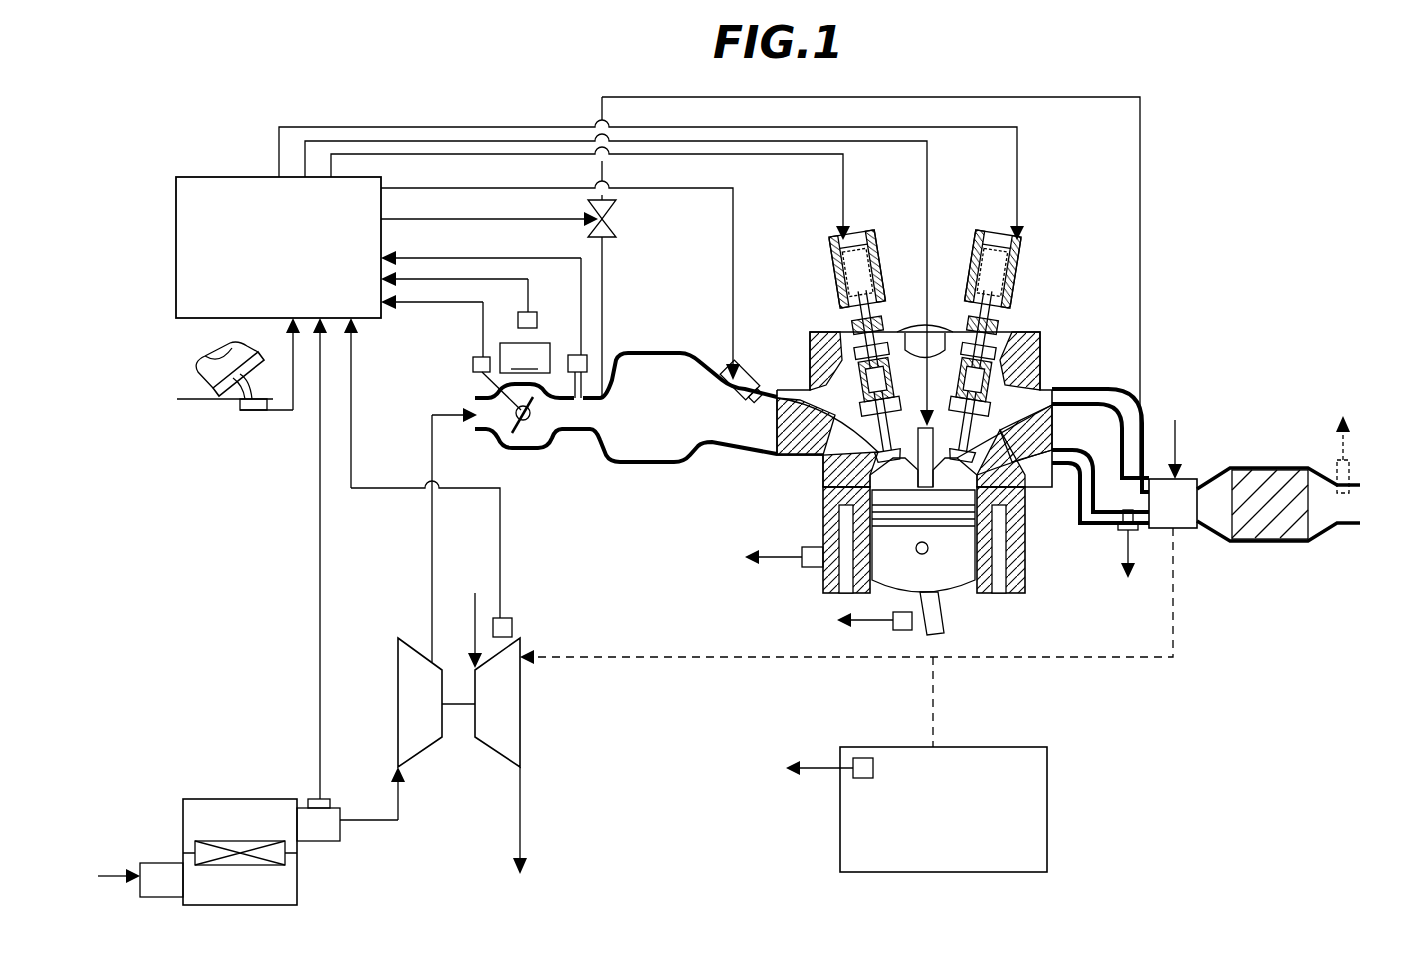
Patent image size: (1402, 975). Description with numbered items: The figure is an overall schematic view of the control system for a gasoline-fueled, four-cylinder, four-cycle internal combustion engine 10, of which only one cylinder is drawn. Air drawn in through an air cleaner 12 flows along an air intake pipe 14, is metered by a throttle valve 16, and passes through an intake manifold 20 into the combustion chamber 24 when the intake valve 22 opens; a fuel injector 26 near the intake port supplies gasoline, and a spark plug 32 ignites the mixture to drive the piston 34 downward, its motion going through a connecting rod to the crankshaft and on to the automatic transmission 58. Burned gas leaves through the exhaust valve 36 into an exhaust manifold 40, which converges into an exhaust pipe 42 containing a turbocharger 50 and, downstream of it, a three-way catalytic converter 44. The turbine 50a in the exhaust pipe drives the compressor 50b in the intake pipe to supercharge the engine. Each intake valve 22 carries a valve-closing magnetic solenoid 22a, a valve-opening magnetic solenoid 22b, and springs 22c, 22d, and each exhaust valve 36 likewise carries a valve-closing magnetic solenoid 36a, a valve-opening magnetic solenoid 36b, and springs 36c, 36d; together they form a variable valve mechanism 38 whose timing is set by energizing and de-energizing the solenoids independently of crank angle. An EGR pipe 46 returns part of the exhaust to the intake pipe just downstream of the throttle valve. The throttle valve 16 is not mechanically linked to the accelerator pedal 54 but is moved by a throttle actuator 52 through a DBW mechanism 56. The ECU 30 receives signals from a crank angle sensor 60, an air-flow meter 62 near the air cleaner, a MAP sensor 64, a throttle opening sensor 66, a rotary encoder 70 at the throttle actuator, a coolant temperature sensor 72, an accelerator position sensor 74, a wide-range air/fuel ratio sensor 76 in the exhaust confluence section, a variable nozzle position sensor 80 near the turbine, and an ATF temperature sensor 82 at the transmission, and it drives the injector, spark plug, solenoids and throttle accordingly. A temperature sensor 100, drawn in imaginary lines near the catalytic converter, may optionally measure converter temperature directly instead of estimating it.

The internal combustion engine 10 is at (1052, 376).
The air cleaner 12 is at (232, 799).
The air intake pipe 14 is at (430, 530).
The throttle valve 16 is at (527, 437).
The intake manifold 20 is at (708, 353).
The intake valve 22 is at (875, 450).
The valve-closing magnetic solenoid 22a is at (824, 304).
The valve-opening magnetic solenoid 22b is at (852, 357).
The spring 22c is at (833, 268).
The spring 22d is at (800, 418).
The combustion chamber 24 is at (910, 492).
The fuel injector 26 is at (755, 365).
The ECU 30 is at (225, 177).
The spark plug 32 is at (930, 492).
The piston 34 is at (953, 600).
The exhaust valve 36 is at (980, 450).
The valve-closing magnetic solenoid 36a is at (957, 295).
The valve-opening magnetic solenoid 36b is at (1040, 345).
The spring 36c is at (1038, 268).
The spring 36d is at (1040, 405).
The variable valve mechanism 38 is at (1042, 275).
The exhaust manifold 40 is at (1073, 455).
The exhaust pipe 42 is at (1100, 523).
The three-way catalytic converter 44 is at (573, 445).
The EGR pipe 46 is at (1142, 355).
The turbocharger 50 is at (1190, 528).
The turbine 50a is at (507, 692).
The compressor 50b is at (425, 750).
The throttle actuator 52 is at (525, 358).
The accelerator pedal 54 is at (205, 384).
The DBW mechanism 56 is at (490, 340).
The automatic transmission 58 is at (1047, 805).
The crank angle sensor 60 is at (902, 632).
The air-flow meter 62 is at (316, 799).
The MAP sensor 64 is at (573, 355).
The throttle opening sensor 66 is at (473, 365).
The rotary encoder 70 is at (534, 312).
The coolant temperature sensor 72 is at (812, 547).
The accelerator position sensor 74 is at (243, 400).
The wide-range air/fuel ratio sensor 76 is at (1136, 523).
The variable nozzle position sensor 80 is at (512, 626).
The ATF temperature sensor 82 is at (863, 758).
The temperature sensor 100 is at (1337, 470).